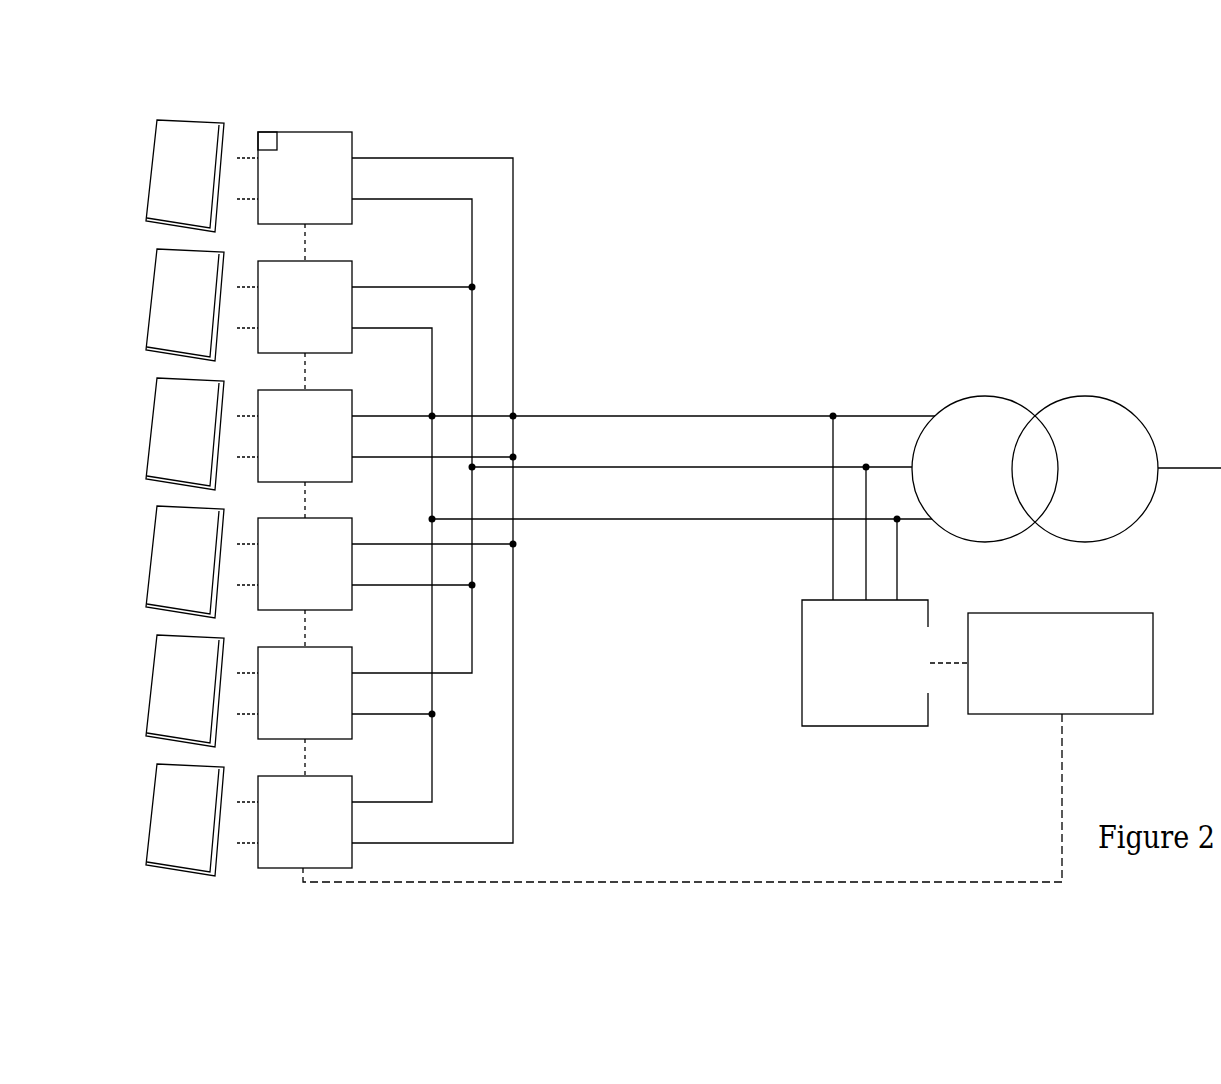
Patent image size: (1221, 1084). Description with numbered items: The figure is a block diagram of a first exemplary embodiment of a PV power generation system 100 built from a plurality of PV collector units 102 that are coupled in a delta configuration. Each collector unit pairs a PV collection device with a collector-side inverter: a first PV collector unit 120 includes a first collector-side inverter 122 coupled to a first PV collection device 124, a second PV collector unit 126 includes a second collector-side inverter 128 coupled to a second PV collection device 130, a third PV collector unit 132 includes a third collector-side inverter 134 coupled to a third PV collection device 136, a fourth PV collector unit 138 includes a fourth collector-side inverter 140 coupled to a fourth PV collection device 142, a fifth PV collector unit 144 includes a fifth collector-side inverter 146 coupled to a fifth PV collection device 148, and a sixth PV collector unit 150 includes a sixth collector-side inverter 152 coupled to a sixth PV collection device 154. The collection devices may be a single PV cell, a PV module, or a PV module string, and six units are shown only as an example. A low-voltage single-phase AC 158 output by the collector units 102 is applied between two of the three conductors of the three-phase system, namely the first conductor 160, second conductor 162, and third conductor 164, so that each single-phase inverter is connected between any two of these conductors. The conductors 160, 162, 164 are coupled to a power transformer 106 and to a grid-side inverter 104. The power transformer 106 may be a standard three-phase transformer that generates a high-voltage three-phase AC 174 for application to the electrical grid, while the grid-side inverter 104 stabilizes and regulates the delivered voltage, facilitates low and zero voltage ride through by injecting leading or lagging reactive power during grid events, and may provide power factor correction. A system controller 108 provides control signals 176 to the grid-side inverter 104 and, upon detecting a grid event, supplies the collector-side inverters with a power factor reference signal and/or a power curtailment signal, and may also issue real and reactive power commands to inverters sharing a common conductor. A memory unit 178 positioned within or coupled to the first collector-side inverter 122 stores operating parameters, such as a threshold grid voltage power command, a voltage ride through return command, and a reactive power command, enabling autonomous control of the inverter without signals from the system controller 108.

The PV power generation system 100 is at (779, 240).
The PV collector units 102 is at (398, 107).
The grid-side inverter 104 is at (922, 600).
The power transformer 106 is at (1086, 395).
The system controller 108 is at (1090, 613).
The first PV collector unit 120 is at (134, 166).
The first collector-side inverter 122 is at (352, 212).
The first PV collection device 124 is at (215, 230).
The second PV collector unit 126 is at (134, 295).
The second collector-side inverter 128 is at (352, 341).
The second PV collection device 130 is at (215, 359).
The third PV collector unit 132 is at (134, 424).
The third collector-side inverter 134 is at (352, 470).
The third PV collection device 136 is at (215, 488).
The fourth PV collector unit 138 is at (134, 552).
The fourth collector-side inverter 140 is at (352, 598).
The fourth PV collection device 142 is at (215, 616).
The fifth PV collector unit 144 is at (134, 681).
The fifth collector-side inverter 146 is at (352, 727).
The fifth PV collection device 148 is at (215, 745).
The sixth PV collector unit 150 is at (134, 810).
The sixth collector-side inverter 152 is at (352, 856).
The sixth PV collection device 154 is at (170, 878).
The low-voltage single-phase AC 158 is at (542, 388).
The first conductor 160 is at (681, 415).
The second conductor 162 is at (617, 466).
The third conductor 164 is at (667, 518).
The high-voltage three-phase AC 174 is at (1190, 466).
The control signals 176 is at (945, 660).
The memory unit 178 is at (280, 136).